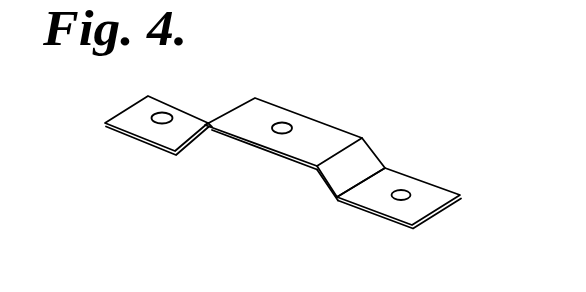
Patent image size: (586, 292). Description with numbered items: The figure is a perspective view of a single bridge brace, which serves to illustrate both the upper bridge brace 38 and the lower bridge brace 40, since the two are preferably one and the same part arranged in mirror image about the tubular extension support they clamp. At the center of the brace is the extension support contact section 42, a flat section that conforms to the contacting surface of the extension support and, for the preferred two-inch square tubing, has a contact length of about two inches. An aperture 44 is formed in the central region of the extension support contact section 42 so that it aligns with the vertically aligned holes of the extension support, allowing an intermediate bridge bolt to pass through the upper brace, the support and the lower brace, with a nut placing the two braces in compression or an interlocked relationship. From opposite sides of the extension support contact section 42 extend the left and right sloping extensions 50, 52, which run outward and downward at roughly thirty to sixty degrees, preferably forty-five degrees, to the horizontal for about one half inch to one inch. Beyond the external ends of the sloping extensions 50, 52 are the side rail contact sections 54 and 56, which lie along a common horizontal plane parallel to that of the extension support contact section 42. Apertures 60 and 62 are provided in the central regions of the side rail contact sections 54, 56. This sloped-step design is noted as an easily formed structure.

The upper bridge brace 38 is at (334, 122).
The lower bridge brace 40 is at (325, 129).
The extension support contact section 42 is at (232, 128).
The aperture 44 is at (282, 124).
The left sloping extension 50 is at (205, 124).
The right sloping extension 52 is at (362, 155).
The side rail contact section 54 is at (123, 122).
The side rail contact section 56 is at (440, 197).
The aperture 60 is at (155, 125).
The aperture 62 is at (388, 202).